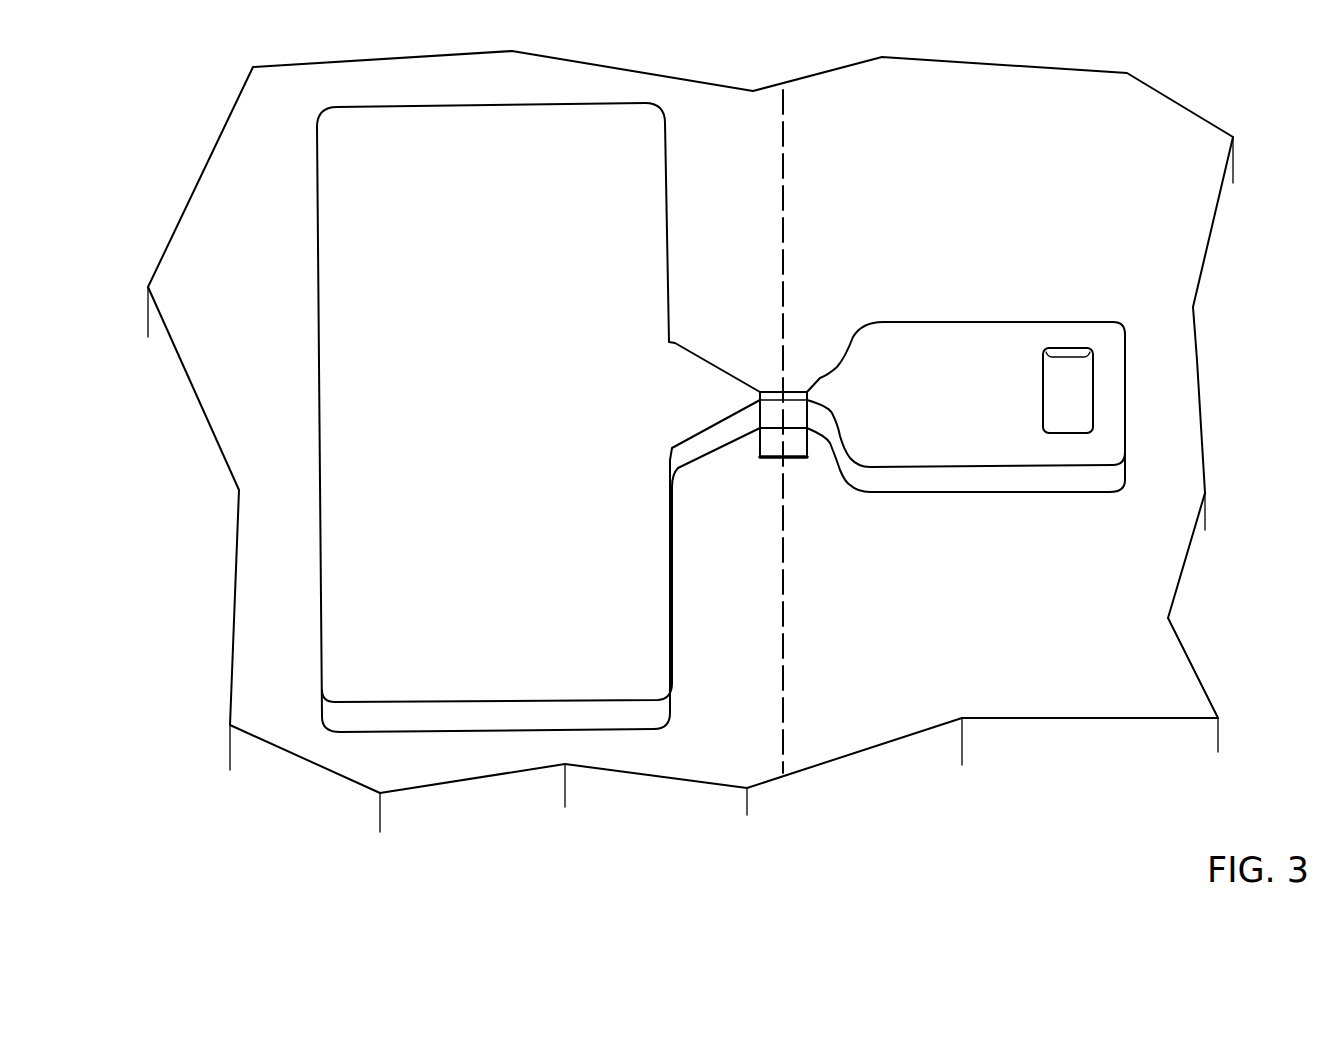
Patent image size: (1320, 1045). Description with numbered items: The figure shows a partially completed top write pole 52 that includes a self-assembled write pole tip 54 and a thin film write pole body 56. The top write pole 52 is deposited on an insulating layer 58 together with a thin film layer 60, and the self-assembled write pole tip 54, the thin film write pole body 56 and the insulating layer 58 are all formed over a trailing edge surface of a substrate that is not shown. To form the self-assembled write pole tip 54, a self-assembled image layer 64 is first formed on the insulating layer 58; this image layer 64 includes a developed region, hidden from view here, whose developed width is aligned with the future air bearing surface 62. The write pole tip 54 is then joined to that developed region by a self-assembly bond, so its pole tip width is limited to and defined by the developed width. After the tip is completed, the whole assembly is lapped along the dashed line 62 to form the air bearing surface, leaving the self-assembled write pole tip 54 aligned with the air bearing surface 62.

The insulating layer 58 is at (1080, 143).
The thin film layer 60 is at (378, 172).
The top write pole 52 is at (1127, 302).
The thin film write pole body 56 is at (863, 423).
The self-assembled write pole tip 54 is at (797, 392).
The self-assembled image layer 64 is at (770, 443).
The air bearing surface 62 is at (784, 603).